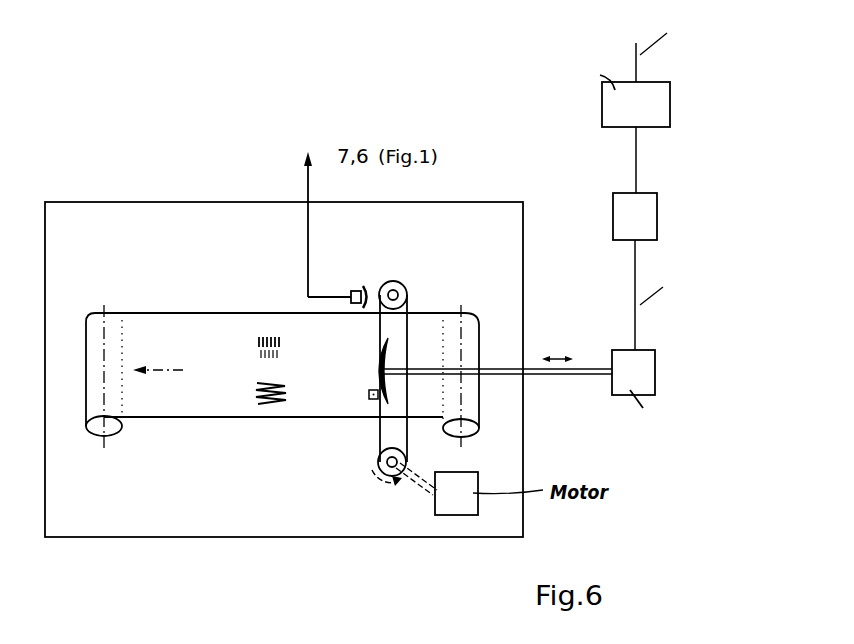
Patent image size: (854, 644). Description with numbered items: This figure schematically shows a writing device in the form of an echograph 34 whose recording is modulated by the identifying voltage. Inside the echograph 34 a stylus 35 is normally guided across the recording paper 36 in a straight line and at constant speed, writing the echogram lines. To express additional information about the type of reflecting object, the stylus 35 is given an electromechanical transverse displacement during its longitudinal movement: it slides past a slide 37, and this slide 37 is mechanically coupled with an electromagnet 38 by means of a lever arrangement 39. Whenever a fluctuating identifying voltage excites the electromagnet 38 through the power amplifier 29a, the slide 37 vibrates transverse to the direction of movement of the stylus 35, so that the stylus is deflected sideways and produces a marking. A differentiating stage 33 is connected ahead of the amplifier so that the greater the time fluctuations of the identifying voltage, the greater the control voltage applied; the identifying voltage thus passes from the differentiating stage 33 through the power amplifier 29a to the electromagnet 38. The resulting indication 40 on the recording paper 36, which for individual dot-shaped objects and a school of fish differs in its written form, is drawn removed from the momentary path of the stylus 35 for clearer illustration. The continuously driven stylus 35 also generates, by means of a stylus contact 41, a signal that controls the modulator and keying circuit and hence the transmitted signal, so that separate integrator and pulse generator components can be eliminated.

The differentiating stage 33 is at (670, 82).
The power amplifier 29a is at (658, 195).
The electromagnet 38 is at (655, 352).
The lever arrangement 39 is at (565, 378).
The echograph 34 is at (168, 202).
The stylus 35 is at (369, 400).
The recording paper 36 is at (205, 393).
The slide 37 is at (389, 358).
The indication 40 is at (255, 375).
The stylus contact 41 is at (359, 291).